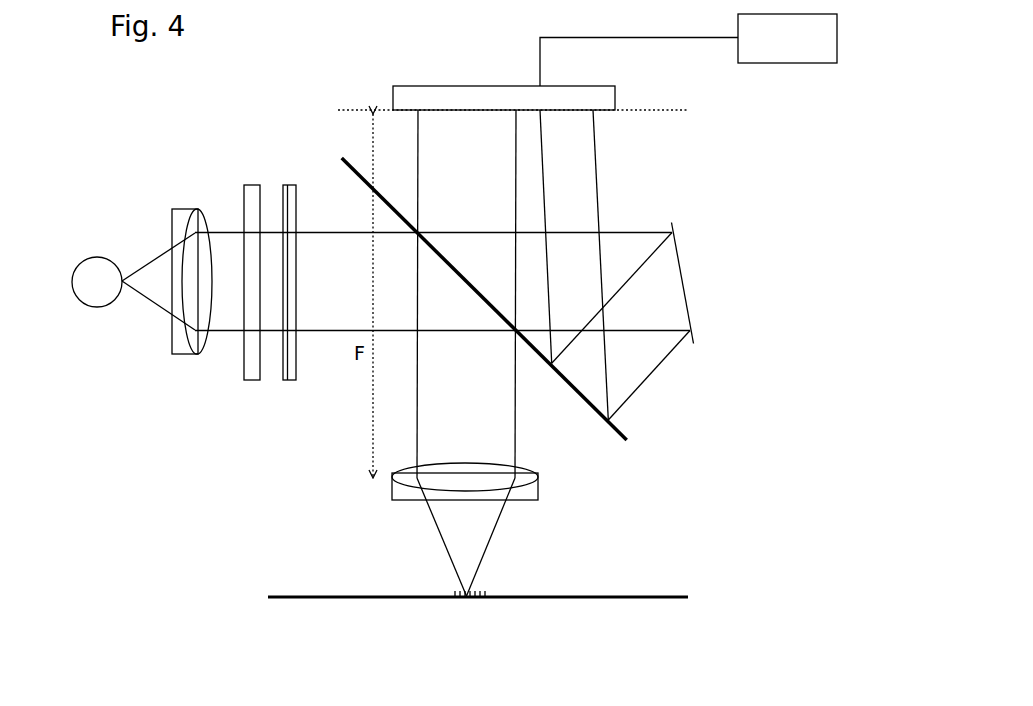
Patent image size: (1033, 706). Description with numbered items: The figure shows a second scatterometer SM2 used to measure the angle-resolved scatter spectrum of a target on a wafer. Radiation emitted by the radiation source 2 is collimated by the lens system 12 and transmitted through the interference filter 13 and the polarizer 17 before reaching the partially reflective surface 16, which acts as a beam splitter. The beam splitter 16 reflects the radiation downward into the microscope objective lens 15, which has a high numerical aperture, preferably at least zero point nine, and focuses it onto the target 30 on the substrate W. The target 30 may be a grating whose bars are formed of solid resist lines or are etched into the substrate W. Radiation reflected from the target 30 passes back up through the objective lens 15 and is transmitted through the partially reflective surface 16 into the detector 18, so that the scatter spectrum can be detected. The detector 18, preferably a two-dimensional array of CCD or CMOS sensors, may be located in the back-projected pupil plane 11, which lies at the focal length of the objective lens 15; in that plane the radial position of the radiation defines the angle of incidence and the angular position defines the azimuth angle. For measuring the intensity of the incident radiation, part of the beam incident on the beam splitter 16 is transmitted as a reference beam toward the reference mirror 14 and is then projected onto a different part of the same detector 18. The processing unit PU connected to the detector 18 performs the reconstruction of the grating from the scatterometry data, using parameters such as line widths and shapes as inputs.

The radiation source 2 is at (103, 292).
The back-projected pupil plane 11 is at (688, 110).
The lens system 12 is at (181, 209).
The interference filter 13 is at (257, 185).
The reference mirror 14 is at (672, 223).
The microscope objective lens 15 is at (391, 490).
The partially reflective surface 16 is at (619, 434).
The polarizer 17 is at (288, 185).
The detector 18 is at (427, 86).
The substrate target 30 is at (471, 607).
The processing unit PU is at (688, 50).
The substrate W is at (583, 596).
The scatterometer SM2 is at (128, 193).